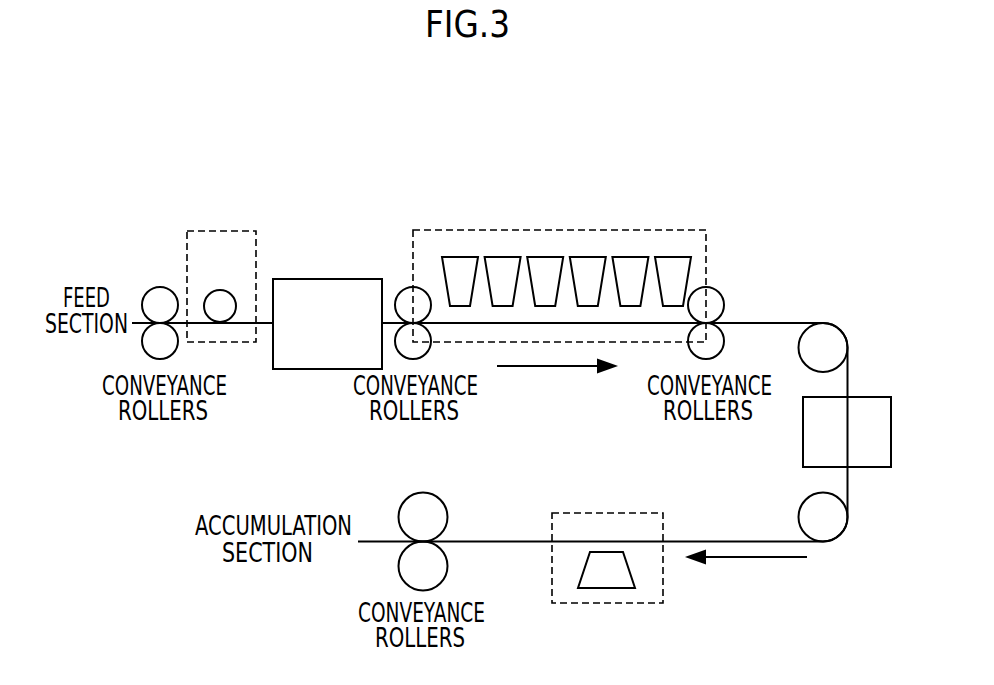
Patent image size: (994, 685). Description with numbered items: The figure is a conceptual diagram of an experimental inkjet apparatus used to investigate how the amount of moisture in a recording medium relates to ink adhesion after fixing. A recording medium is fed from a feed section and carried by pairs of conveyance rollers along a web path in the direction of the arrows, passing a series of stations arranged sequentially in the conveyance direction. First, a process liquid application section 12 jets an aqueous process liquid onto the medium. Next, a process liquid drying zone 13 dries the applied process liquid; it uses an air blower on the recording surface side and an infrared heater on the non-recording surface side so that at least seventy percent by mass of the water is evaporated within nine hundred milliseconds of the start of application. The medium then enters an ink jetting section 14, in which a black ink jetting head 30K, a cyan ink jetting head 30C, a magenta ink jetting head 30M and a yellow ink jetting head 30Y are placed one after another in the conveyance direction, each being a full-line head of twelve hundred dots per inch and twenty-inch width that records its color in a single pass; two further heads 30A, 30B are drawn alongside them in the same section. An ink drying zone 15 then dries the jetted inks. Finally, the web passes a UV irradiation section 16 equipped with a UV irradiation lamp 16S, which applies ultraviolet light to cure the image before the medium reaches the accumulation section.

The process liquid application section 12 is at (235, 230).
The process liquid drying zone 13 is at (330, 278).
The ink jetting section 14 is at (708, 238).
The black ink jetting head 30K is at (458, 257).
The cyan ink jetting head 30C is at (505, 257).
The magenta ink jetting head 30M is at (547, 257).
The yellow ink jetting head 30Y is at (588, 257).
The ink head A 30A is at (632, 257).
The ink head B 30B is at (677, 257).
The ink drying zone 15 is at (870, 397).
The UV irradiation section 16 is at (642, 603).
The UV irradiation lamp 16S is at (600, 588).